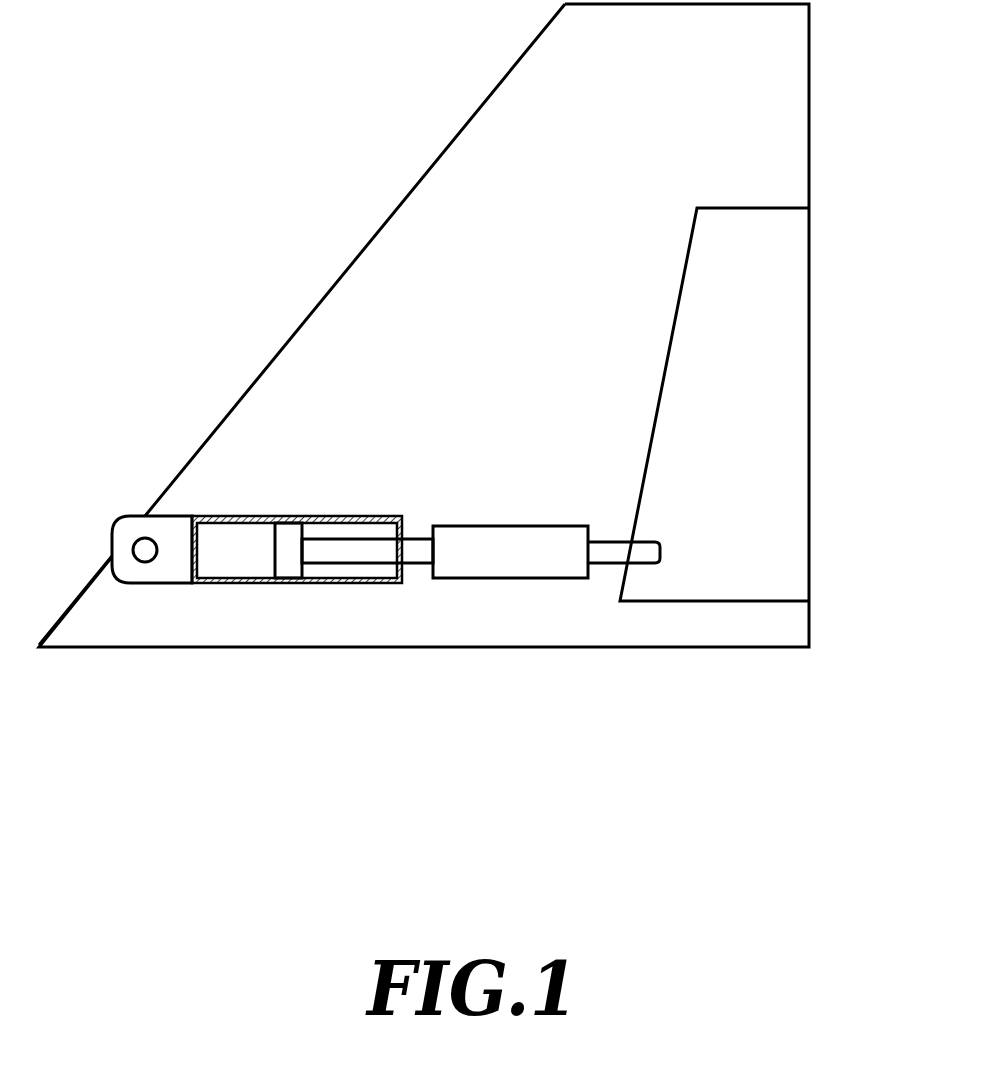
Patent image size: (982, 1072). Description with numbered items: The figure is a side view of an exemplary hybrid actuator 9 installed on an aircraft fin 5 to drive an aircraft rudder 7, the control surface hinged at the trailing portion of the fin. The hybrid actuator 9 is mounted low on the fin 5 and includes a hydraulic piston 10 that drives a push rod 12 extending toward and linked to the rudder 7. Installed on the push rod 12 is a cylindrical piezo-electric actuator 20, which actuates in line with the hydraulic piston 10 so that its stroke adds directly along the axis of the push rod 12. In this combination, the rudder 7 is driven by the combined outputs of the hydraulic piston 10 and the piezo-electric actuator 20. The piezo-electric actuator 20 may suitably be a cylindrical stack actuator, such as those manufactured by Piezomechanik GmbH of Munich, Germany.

The aircraft fin 5 is at (387, 278).
The aircraft rudder 7 is at (775, 366).
The hybrid actuator 9 is at (190, 713).
The hydraulic piston 10 is at (323, 583).
The push rod 12 is at (418, 538).
The piezo-electric actuator 20 is at (518, 526).